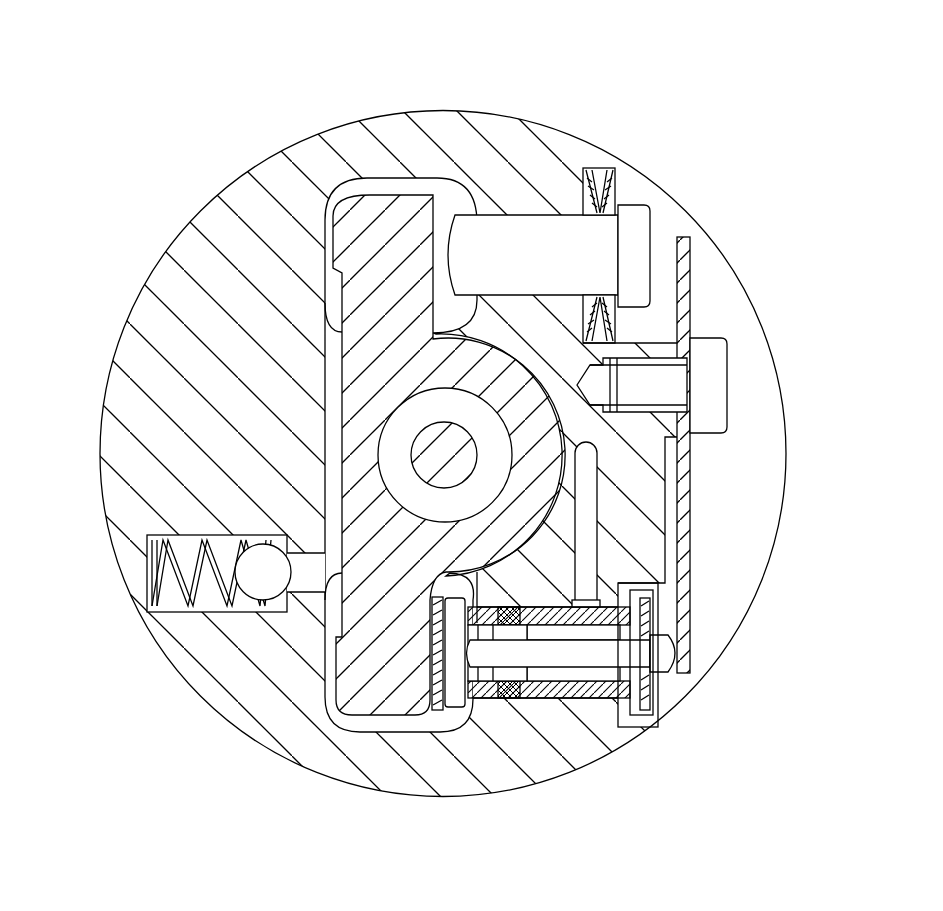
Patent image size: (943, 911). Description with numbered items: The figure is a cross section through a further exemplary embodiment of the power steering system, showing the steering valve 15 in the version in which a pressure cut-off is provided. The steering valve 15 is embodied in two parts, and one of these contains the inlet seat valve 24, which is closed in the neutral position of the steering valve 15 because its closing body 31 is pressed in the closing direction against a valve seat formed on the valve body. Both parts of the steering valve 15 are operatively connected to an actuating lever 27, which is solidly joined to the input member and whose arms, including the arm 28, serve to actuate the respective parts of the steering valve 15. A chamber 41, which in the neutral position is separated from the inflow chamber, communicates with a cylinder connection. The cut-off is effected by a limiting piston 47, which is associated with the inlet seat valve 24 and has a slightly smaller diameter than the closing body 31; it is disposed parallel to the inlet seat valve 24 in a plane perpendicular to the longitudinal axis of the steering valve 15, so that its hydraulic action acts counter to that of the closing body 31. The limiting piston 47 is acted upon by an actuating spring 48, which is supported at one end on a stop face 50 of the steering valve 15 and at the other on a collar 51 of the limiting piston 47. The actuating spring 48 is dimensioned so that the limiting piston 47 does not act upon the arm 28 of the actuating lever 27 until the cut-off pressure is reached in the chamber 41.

The steering valve 15 is at (262, 235).
The arm 28 is at (376, 243).
The actuating lever 27 is at (352, 452).
The limiting piston 47 is at (582, 252).
The collar 51 is at (627, 224).
The stop face 50 is at (590, 196).
The actuating spring 48 is at (607, 190).
The chamber 41 is at (722, 307).
The closing body 31 is at (538, 692).
The inlet seat valve 24 is at (632, 732).